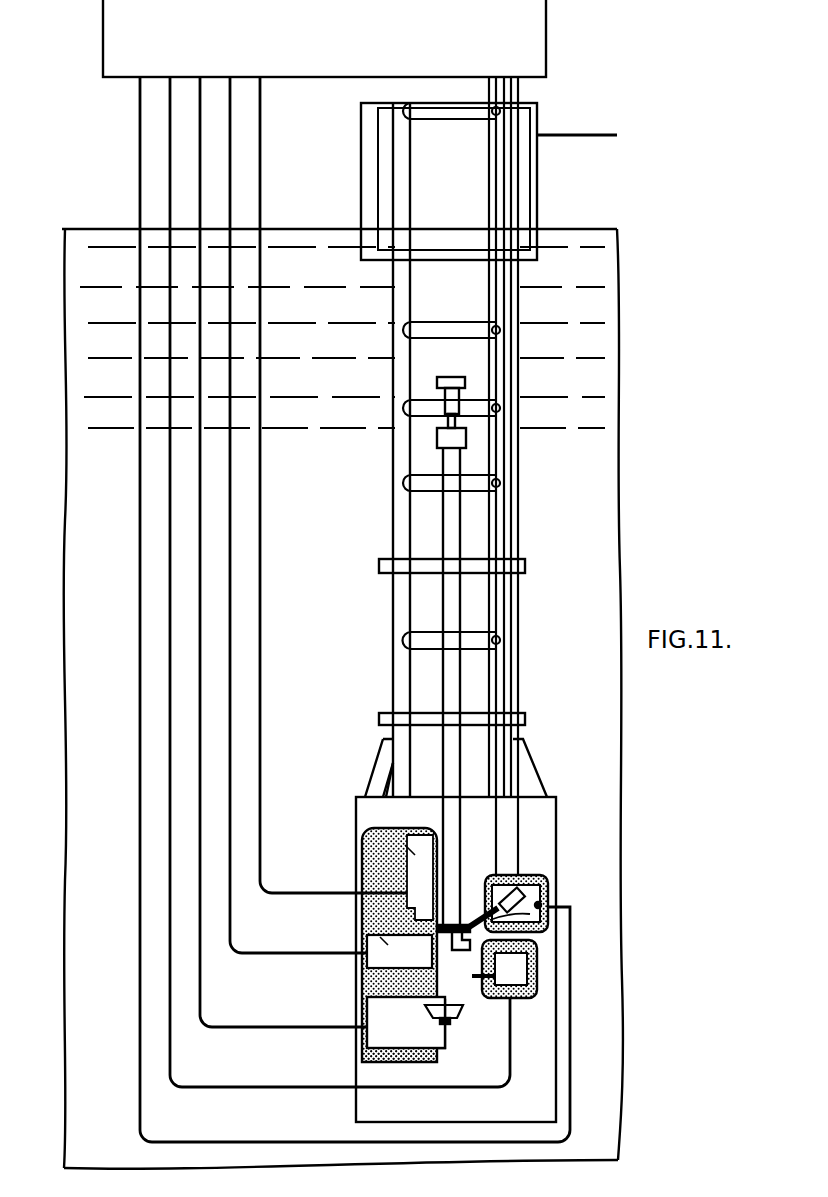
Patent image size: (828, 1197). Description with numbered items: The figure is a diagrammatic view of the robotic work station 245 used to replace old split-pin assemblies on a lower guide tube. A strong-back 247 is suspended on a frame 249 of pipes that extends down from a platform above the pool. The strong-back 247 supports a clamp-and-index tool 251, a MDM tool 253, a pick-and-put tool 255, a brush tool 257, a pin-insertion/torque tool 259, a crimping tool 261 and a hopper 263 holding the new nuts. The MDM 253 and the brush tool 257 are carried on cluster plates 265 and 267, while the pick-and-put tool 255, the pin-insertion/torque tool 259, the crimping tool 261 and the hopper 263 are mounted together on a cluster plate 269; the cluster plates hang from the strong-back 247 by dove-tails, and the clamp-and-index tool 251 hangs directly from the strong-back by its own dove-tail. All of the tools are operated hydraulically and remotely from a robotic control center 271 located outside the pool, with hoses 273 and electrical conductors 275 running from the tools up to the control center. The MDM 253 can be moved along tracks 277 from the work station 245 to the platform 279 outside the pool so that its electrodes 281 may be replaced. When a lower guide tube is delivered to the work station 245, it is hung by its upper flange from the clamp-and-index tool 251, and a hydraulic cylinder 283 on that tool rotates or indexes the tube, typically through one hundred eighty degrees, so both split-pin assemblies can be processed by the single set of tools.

The work station 245 is at (134, 761).
The strong-back 247 is at (543, 1090).
The frame 249 is at (391, 546).
The clamp-and-index tool 251 is at (462, 603).
The MDM tool 253 is at (537, 896).
The pick-and-put tool 255 is at (367, 934).
The brush tool 257 is at (517, 963).
The pin-insertion/torque tool 259 is at (380, 1038).
The crimping tool 261 is at (363, 851).
The hopper 263 is at (458, 1016).
The cluster plate 265 is at (527, 875).
The cluster plate 267 is at (537, 977).
The cluster plate 269 is at (430, 1060).
The robotic control center 271 is at (98, 26).
The hoses 273 is at (200, 644).
The electrical conductors 275 is at (570, 1072).
The tracks 277 is at (488, 291).
The platform 279 is at (574, 135).
The electrodes 281 is at (538, 905).
The hydraulic cylinder 283 is at (447, 395).